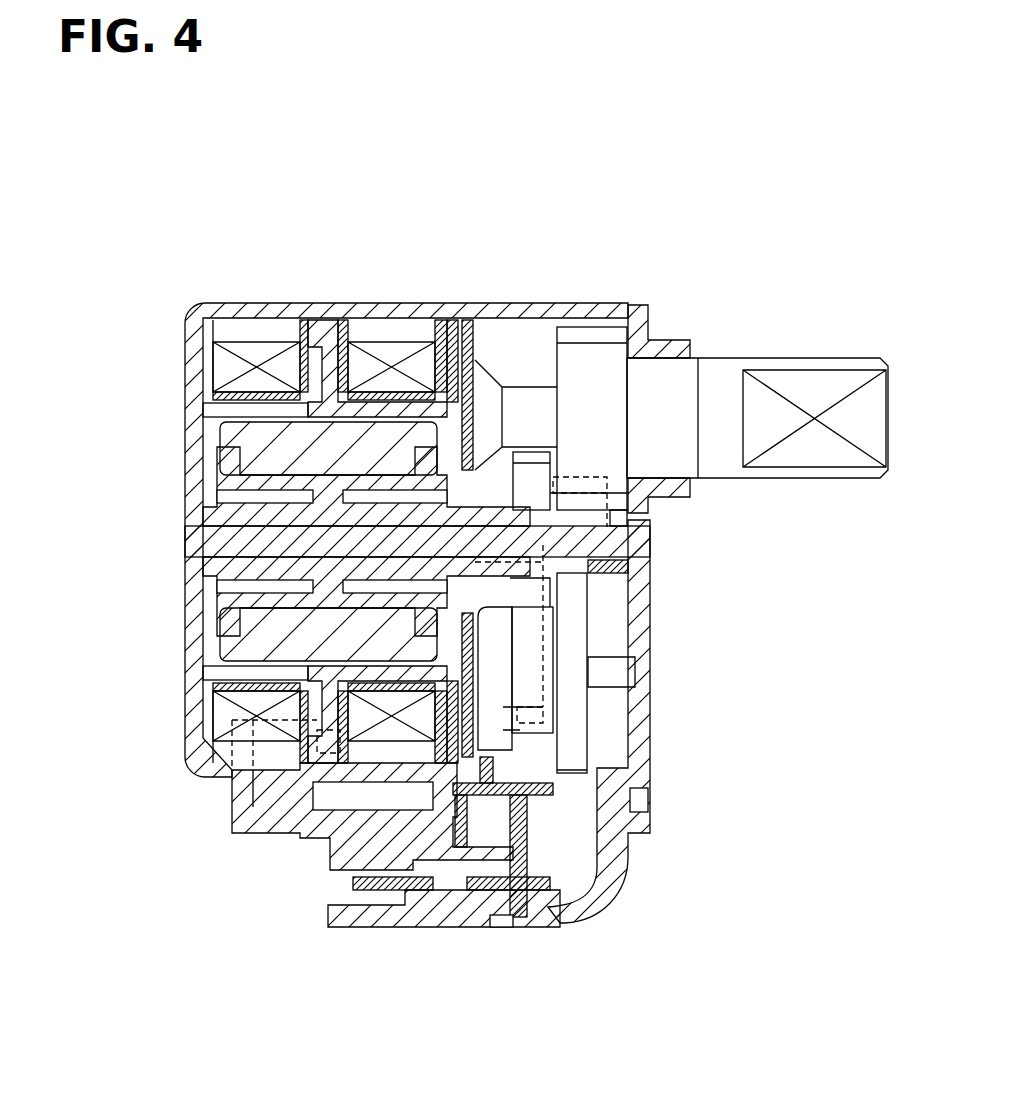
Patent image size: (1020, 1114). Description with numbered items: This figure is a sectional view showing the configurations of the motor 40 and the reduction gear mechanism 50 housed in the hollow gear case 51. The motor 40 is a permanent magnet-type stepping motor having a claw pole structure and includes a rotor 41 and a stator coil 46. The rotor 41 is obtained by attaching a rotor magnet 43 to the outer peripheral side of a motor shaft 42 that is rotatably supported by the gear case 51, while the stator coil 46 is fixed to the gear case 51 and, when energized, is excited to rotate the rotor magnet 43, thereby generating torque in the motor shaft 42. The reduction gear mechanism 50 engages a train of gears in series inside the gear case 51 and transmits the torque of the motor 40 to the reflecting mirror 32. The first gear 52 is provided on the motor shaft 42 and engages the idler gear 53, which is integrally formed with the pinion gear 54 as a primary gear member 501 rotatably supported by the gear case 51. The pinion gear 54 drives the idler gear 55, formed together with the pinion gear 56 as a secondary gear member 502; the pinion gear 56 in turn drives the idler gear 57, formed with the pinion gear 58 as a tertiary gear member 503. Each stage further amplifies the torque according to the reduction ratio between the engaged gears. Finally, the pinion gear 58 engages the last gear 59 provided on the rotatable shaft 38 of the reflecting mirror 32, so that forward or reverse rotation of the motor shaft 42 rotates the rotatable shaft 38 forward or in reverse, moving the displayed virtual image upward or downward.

The reflecting mirror 32 is at (757, 357).
The rotatable shaft 38 is at (814, 352).
The motor 40 is at (213, 645).
The rotor 41 is at (353, 510).
The motor shaft 42 is at (275, 512).
The rotor magnet 43 is at (228, 436).
The stator coil 46 is at (257, 348).
The reduction gear mechanism 50 is at (593, 740).
The gear case 51 is at (197, 768).
The first gear 52 is at (600, 573).
The idler gear 53 is at (578, 618).
The pinion gear 54 is at (503, 703).
The idler gear 55 is at (483, 757).
The pinion gear 56 is at (488, 757).
The idler gear 57 is at (547, 455).
The pinion gear 58 is at (650, 510).
The last gear 59 is at (592, 333).
The primary gear member 501 is at (650, 659).
The secondary gear member 502 is at (444, 903).
The tertiary gear member 503 is at (694, 510).